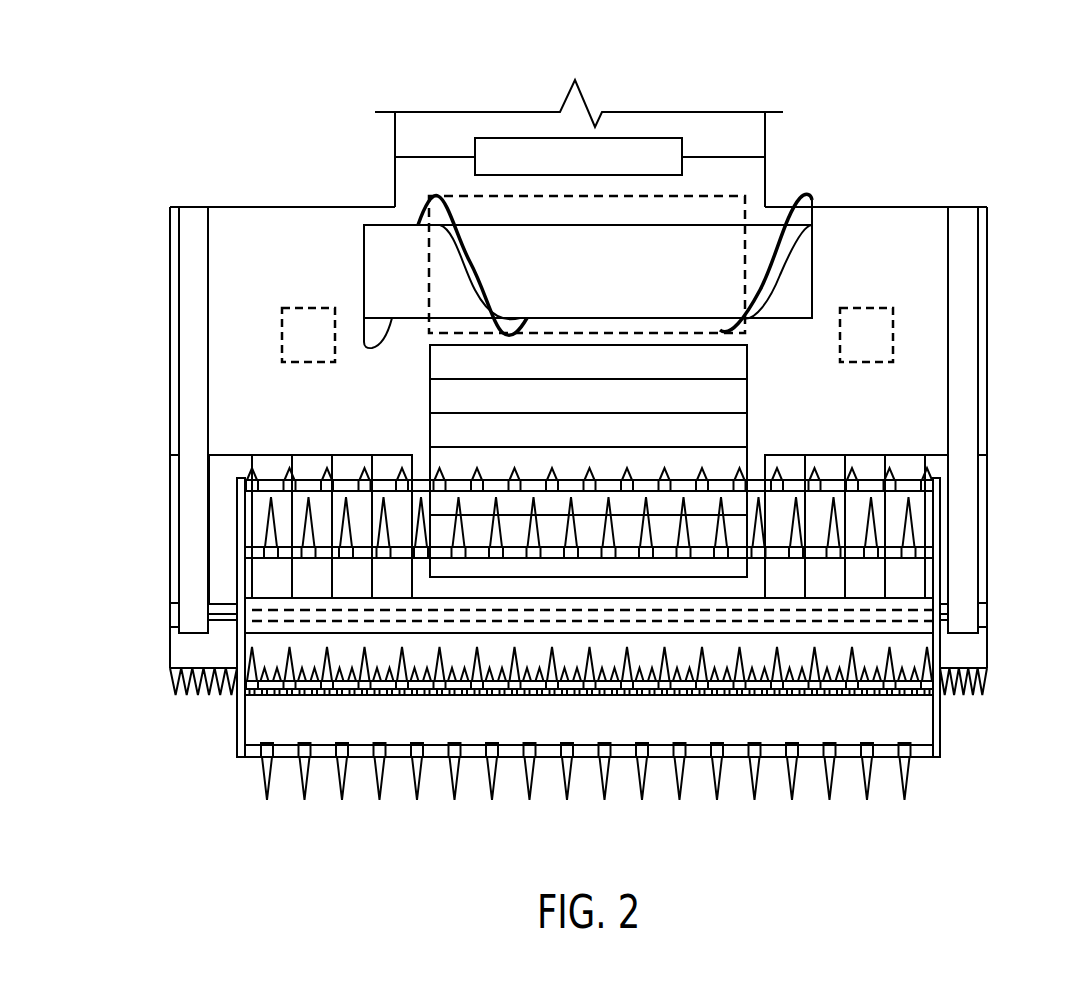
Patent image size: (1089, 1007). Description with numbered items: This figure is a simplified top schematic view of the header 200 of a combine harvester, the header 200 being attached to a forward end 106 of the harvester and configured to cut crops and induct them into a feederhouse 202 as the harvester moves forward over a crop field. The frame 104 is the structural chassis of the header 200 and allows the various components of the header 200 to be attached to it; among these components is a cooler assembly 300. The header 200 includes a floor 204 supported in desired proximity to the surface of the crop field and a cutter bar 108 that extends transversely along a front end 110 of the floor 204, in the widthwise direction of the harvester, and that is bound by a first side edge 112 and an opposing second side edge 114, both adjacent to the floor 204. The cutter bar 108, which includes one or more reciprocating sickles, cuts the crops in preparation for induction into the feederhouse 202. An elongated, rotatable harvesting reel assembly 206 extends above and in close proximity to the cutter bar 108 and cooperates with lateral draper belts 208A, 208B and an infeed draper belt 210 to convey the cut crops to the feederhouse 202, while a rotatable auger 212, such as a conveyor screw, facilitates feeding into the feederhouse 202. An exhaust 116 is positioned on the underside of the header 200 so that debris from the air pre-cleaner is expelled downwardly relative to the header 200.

The header 200 is at (195, 138).
The forward end 106 is at (720, 118).
The feederhouse 202 is at (493, 147).
The cooler assembly 300 is at (712, 188).
The rotatable auger 212 is at (767, 240).
The infeed draper belt 210 is at (725, 363).
The frame 104 is at (933, 207).
The exhaust 116 is at (275, 330).
The lateral draper belt 208B is at (303, 464).
The lateral draper belt 208A is at (862, 464).
The second side edge 114 is at (170, 515).
The first side edge 112 is at (987, 530).
The cutter bar 108 is at (170, 683).
The harvesting reel assembly 206 is at (955, 752).
The floor 204 is at (490, 655).
The front end 110 is at (373, 662).